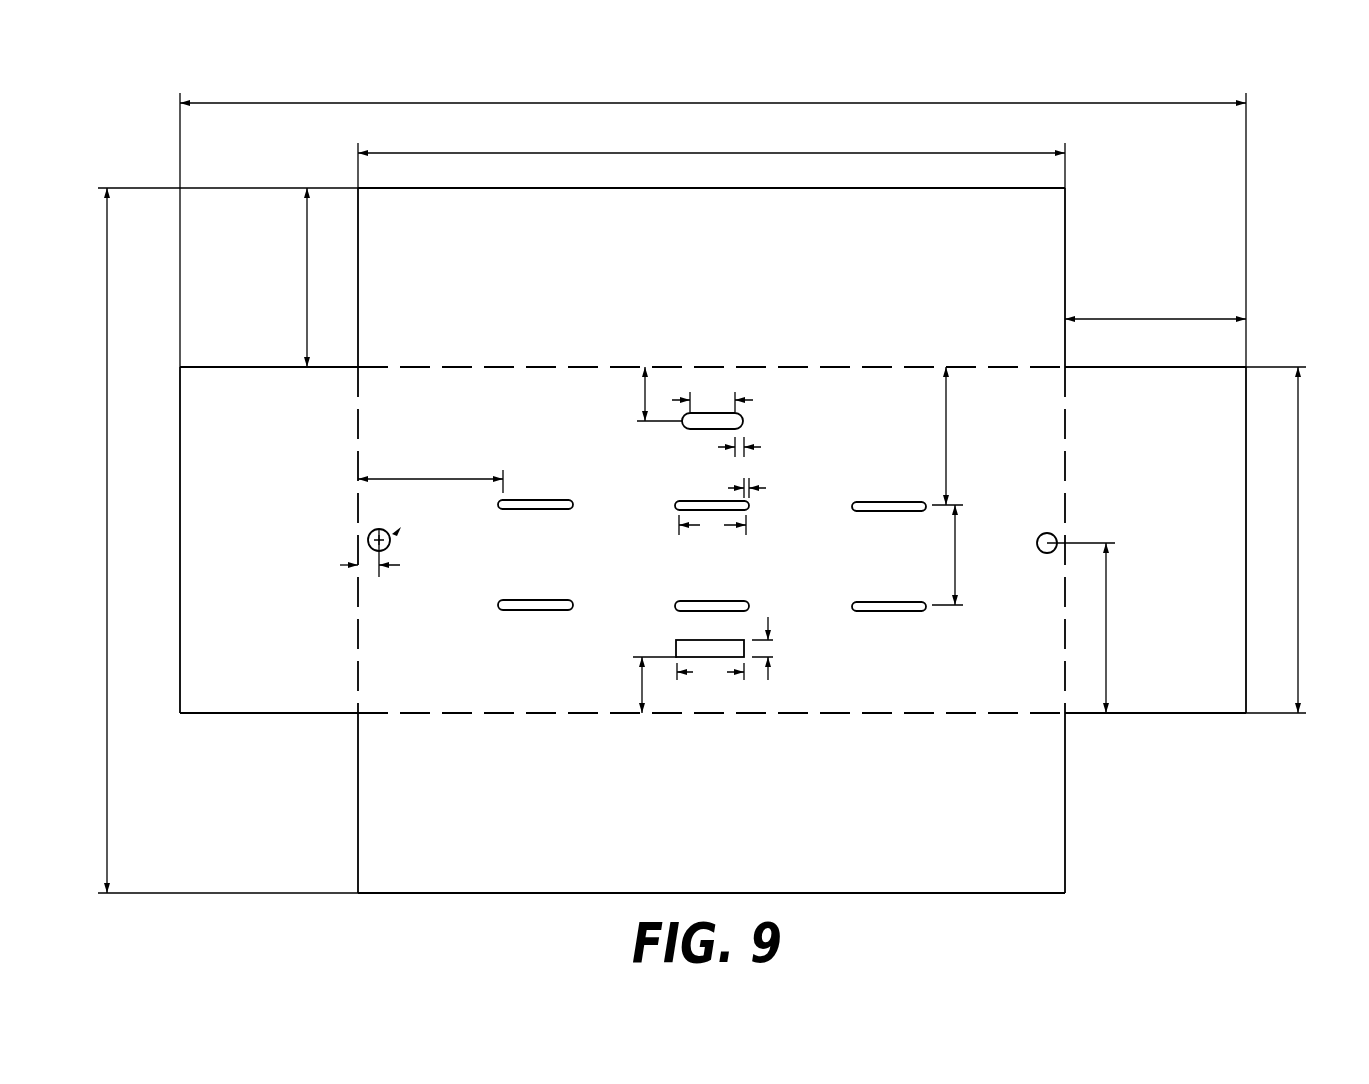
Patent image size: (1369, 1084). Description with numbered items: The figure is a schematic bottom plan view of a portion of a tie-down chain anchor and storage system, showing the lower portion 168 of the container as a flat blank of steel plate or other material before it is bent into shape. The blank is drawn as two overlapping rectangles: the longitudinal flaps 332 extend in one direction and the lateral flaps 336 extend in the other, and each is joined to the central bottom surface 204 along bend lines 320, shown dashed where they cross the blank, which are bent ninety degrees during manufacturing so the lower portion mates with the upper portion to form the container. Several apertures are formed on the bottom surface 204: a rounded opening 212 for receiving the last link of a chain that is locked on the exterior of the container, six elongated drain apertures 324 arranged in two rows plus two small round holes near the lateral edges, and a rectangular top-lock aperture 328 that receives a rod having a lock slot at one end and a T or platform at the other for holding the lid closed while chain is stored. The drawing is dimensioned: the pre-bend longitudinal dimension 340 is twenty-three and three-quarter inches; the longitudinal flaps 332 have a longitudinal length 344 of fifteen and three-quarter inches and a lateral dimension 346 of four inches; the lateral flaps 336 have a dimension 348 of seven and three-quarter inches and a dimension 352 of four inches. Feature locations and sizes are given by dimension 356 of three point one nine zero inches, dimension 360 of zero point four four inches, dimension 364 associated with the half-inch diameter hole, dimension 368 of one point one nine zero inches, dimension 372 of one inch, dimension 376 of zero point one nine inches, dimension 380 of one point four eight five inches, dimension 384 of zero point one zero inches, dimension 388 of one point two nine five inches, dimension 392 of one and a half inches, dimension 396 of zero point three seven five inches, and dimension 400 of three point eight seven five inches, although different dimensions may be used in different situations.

The lower portion 168 is at (1013, 382).
The bottom surface 204 is at (432, 676).
The opening 212 is at (710, 412).
The bend lines 320 is at (545, 367).
The drain apertures 324 is at (535, 498).
The top-lock aperture 328 is at (690, 640).
The longitudinal flaps 332 is at (692, 251).
The lateral flaps 336 is at (233, 581).
The pre-bend longitudinal dimension 340 is at (730, 103).
The longitudinal length 344 is at (782, 153).
The lateral dimension 346 is at (307, 300).
The dimension 348 is at (1298, 632).
The dimension 352 is at (1143, 319).
The dimension 356 is at (425, 478).
The dimension 360 is at (343, 565).
The dimension 364 is at (392, 534).
The dimension 368 is at (652, 385).
The dimension 372 is at (752, 400).
The dimension 376 is at (762, 447).
The dimension 380 is at (698, 525).
The dimension 384 is at (770, 488).
The dimension 388 is at (640, 690).
The dimension 392 is at (732, 672).
The dimension 396 is at (768, 677).
The dimension 400 is at (1106, 622).